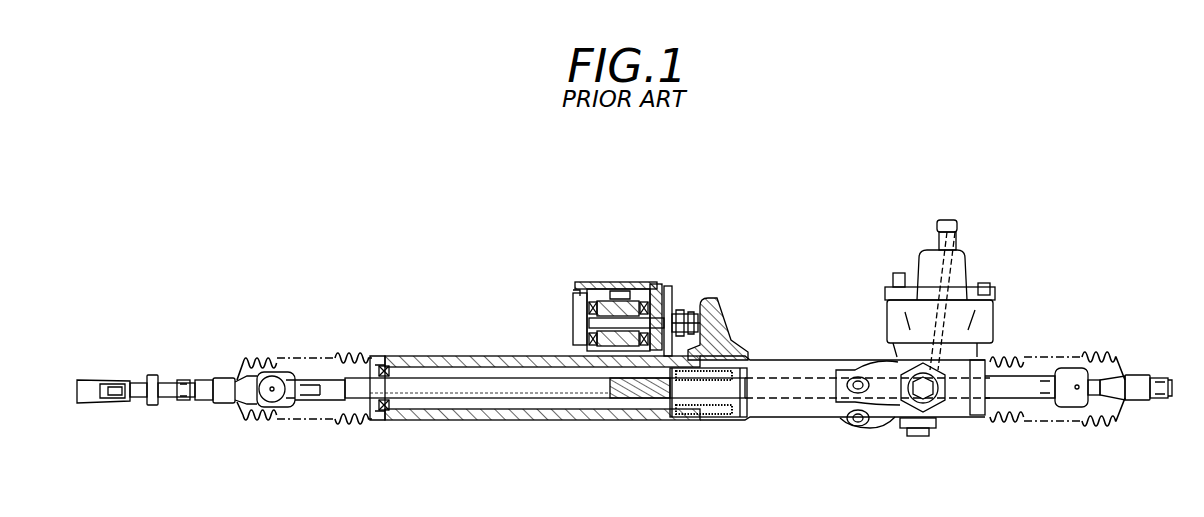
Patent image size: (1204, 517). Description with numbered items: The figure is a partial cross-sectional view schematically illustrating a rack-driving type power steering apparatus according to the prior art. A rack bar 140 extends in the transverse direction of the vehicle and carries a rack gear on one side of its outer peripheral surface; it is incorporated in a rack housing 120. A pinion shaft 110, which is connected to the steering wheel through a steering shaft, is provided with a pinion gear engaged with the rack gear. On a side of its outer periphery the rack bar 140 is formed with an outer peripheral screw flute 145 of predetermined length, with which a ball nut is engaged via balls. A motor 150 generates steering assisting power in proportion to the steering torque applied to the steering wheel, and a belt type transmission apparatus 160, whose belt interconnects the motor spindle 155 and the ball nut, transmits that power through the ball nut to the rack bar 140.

The pinion shaft 110 is at (938, 225).
The rack housing 120 is at (510, 412).
The rack bar 140 is at (455, 395).
The outer peripheral screw flute 145 is at (628, 400).
The motor 150 is at (616, 281).
The motor spindle 155 is at (680, 317).
The belt type transmission apparatus 160 is at (716, 296).